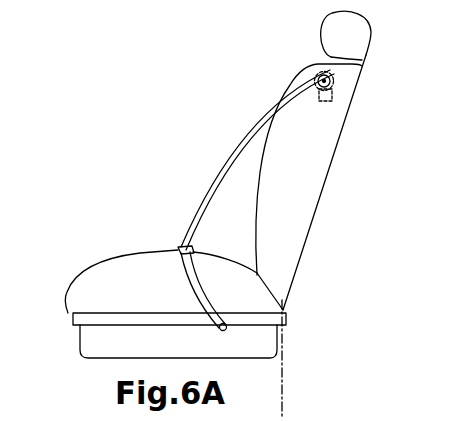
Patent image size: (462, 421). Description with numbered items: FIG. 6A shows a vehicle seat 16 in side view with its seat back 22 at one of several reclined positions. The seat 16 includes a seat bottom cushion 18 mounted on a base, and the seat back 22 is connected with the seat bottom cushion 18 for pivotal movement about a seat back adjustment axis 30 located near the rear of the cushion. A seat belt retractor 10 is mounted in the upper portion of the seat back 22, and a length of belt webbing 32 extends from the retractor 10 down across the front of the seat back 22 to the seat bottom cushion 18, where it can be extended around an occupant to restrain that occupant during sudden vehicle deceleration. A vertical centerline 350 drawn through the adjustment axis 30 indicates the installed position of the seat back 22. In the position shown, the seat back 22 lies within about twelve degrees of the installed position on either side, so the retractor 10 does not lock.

The seat belt retractor 10 is at (360, 73).
The seat 16 is at (141, 248).
The seat bottom cushion 18 is at (86, 268).
The seat back 22 is at (312, 222).
The seat back adjustment axis 30 is at (285, 306).
The belt webbing 32 is at (205, 189).
The centerline 350 is at (284, 378).